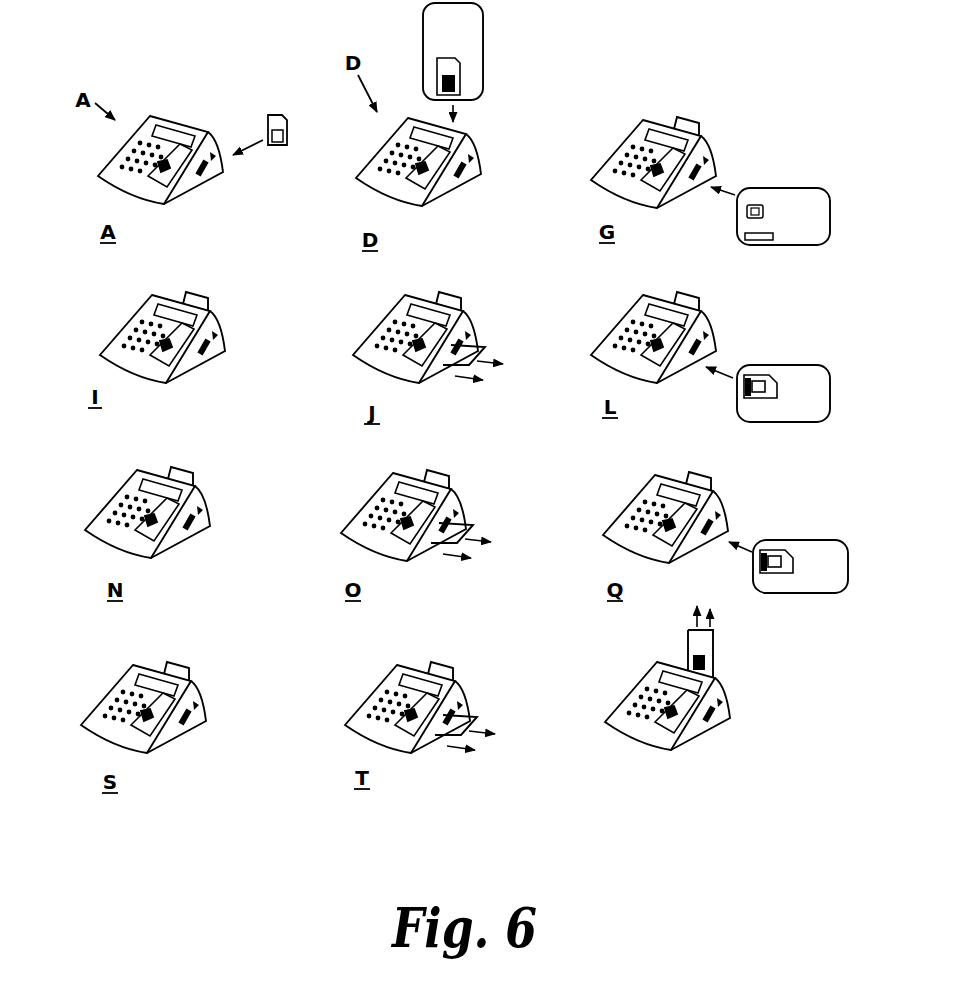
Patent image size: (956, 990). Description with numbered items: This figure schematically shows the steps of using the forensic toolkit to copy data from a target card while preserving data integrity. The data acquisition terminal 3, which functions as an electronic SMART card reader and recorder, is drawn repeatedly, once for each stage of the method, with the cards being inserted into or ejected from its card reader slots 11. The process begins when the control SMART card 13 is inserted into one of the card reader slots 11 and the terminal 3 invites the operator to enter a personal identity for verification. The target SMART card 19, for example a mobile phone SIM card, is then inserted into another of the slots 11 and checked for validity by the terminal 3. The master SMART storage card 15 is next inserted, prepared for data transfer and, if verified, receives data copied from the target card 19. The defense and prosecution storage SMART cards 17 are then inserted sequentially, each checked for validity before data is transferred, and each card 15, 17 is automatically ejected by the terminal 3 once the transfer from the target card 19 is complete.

The data acquisition terminal 3 is at (405, 460).
The card reader slot 11 is at (475, 403).
The control SMART card 13 is at (273, 113).
The master SMART storage card 15 is at (517, 266).
The storage SMART card 17 is at (513, 538).
The target SMART card 19 is at (470, 342).